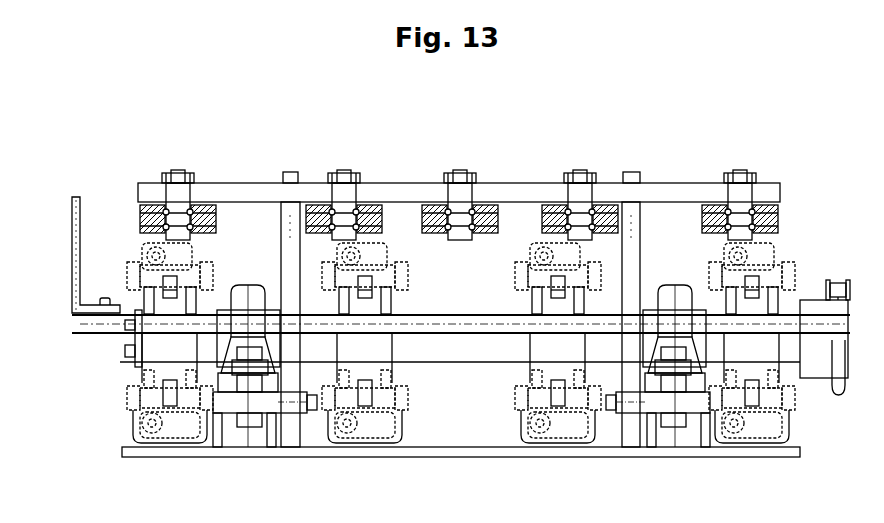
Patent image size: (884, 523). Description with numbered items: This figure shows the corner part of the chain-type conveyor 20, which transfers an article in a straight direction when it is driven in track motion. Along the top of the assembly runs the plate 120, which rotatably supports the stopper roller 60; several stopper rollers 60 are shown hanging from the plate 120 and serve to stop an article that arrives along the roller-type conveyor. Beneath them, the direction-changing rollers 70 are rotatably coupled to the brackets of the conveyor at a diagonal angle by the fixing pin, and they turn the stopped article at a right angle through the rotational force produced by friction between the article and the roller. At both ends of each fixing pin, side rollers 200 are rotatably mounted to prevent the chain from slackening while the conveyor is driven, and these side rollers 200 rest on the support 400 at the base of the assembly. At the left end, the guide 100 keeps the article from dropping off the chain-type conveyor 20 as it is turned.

The chain-type conveyor 20 is at (412, 429).
The stopper roller 60 is at (215, 219).
The direction-changing roller 70 is at (560, 247).
The guide 100 is at (72, 247).
The plate 120 is at (770, 192).
The side roller 200 is at (786, 274).
The support 400 is at (790, 450).